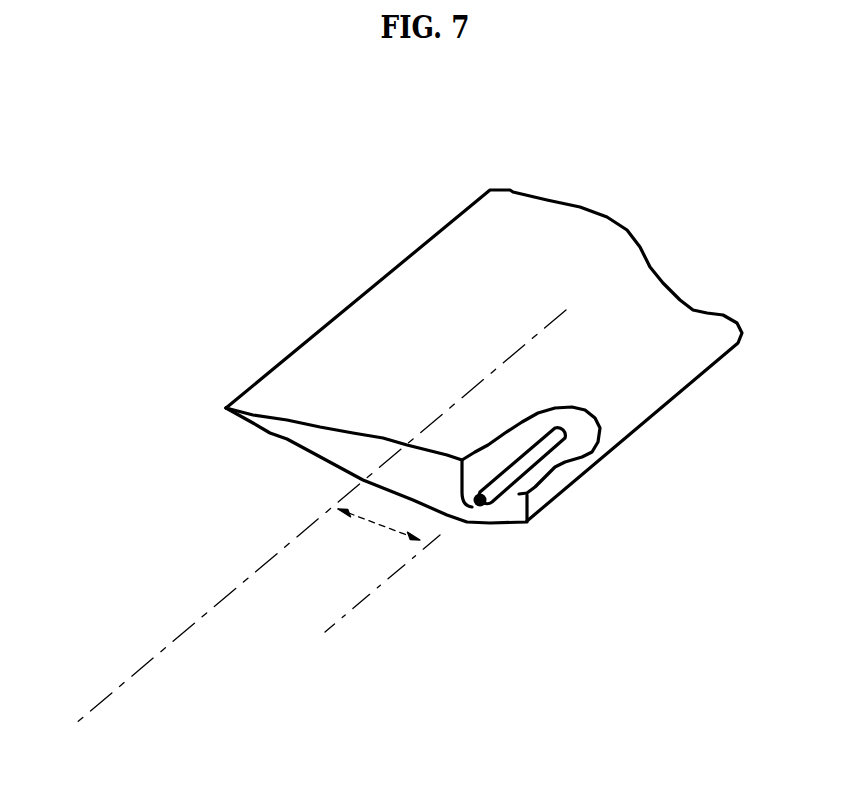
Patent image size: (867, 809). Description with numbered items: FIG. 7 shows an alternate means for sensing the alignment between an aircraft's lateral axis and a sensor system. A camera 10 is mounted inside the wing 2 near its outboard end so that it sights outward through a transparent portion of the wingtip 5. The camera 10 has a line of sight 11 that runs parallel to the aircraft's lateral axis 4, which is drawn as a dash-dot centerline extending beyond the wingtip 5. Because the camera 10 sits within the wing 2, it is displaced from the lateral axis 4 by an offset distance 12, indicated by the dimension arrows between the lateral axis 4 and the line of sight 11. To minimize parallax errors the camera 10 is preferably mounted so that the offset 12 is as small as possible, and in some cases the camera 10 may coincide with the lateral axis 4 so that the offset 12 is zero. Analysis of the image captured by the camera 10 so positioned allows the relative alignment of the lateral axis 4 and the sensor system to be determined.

The wing 2 is at (668, 415).
The lateral axis 4 is at (207, 604).
The wingtip 5 is at (493, 532).
The camera 10 is at (515, 480).
The line of sight 11 is at (370, 598).
The offset distance 12 is at (371, 537).